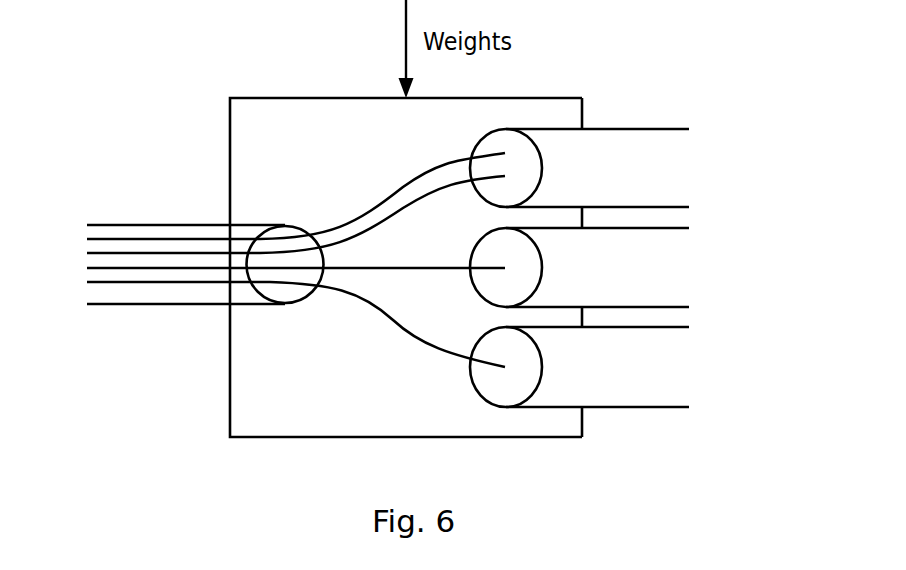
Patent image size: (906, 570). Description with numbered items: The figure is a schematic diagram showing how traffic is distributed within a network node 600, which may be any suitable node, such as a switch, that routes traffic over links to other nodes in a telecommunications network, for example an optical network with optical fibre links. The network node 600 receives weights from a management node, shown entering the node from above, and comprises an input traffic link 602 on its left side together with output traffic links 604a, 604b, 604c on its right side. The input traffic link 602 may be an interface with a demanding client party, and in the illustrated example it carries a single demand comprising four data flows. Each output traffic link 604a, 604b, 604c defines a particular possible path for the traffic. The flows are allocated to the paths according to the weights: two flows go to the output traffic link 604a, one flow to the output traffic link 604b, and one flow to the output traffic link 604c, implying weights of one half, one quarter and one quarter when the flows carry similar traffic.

The network node 600 is at (229, 130).
The input traffic link 602 is at (103, 225).
The output traffic link 604a is at (676, 128).
The output traffic link 604b is at (676, 228).
The output traffic link 604c is at (676, 327).